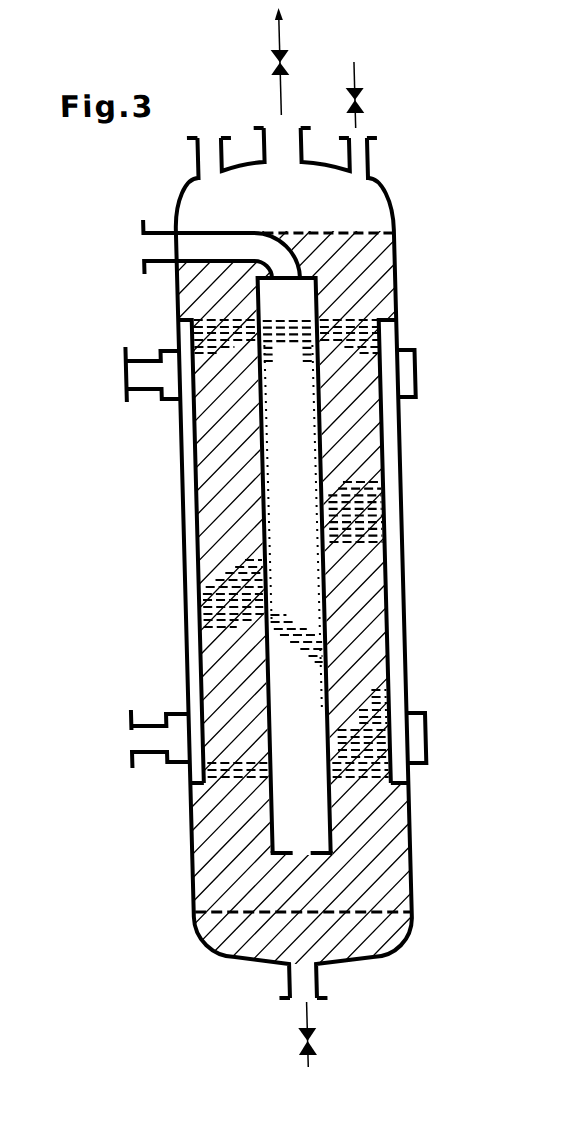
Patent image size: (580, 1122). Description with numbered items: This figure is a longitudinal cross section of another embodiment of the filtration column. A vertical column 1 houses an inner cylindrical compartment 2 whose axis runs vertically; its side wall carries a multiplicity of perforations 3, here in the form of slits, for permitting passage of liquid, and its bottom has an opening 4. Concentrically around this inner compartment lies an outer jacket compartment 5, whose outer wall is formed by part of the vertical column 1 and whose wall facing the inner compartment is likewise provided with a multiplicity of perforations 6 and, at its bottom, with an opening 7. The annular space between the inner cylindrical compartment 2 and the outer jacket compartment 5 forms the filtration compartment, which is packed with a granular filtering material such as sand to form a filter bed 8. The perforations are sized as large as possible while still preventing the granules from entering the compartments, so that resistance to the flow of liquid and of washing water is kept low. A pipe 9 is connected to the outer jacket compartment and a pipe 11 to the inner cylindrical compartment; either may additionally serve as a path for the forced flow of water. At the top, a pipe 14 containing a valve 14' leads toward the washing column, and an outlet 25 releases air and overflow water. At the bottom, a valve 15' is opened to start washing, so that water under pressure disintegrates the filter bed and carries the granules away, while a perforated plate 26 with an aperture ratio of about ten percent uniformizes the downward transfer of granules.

The vertical column 1 is at (405, 637).
The inner cylindrical compartment 2 is at (294, 537).
The perforations 3 is at (306, 340).
The opening 4 is at (292, 848).
The outer jacket compartment 5 is at (394, 505).
The perforations 6 is at (358, 527).
The opening 7 is at (394, 786).
The filter bed 8 is at (368, 618).
The pipe 9 is at (130, 740).
The pipe 11 is at (151, 250).
The pipe 14 is at (302, 61).
The valve 14' is at (303, 63).
The valve 15' is at (340, 1034).
The outlet 25 is at (374, 78).
The perforated plate 26 is at (204, 910).